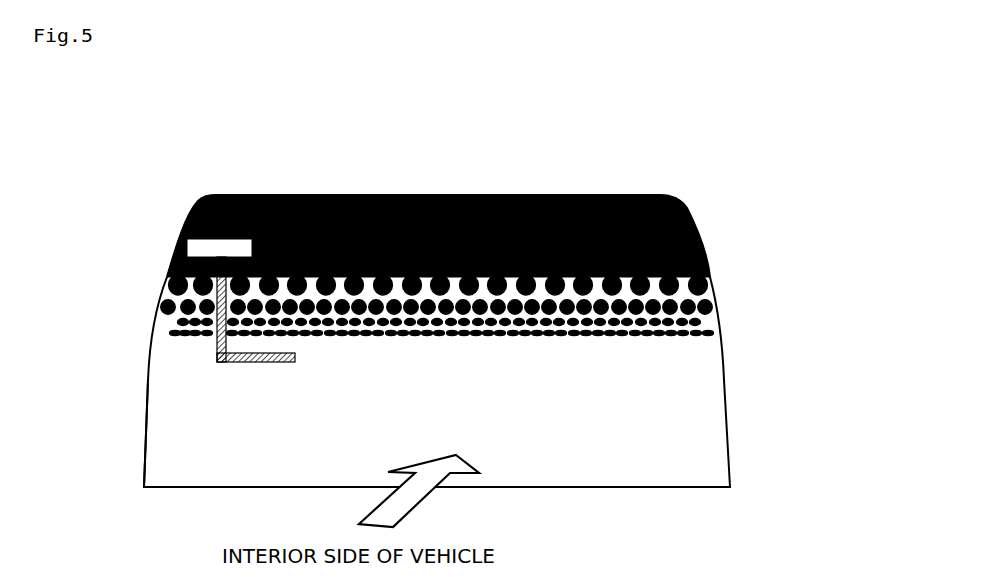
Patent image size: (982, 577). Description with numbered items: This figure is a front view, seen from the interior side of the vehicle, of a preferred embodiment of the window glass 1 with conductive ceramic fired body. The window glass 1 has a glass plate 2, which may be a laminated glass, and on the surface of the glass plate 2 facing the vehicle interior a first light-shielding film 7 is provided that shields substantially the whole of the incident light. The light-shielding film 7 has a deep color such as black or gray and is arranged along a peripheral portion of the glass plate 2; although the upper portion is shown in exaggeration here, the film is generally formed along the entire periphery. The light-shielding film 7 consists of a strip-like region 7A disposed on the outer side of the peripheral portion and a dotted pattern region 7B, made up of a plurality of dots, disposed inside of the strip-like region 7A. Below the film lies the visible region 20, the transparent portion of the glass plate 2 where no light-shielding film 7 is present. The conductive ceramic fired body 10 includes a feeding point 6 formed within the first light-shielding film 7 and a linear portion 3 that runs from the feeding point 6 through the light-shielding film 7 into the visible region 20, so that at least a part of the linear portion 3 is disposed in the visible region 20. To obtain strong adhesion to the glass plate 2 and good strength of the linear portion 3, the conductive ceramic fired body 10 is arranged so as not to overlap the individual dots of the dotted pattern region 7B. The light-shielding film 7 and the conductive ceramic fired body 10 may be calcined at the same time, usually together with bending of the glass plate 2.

The window glass with conductive ceramic fired body 1 is at (598, 165).
The glass plate 2 is at (163, 458).
The linear portion 3 is at (217, 343).
The feeding point 6 is at (207, 245).
The first light-shielding film 7 is at (505, 265).
The strip-like region 7A is at (725, 200).
The dotted pattern region 7B is at (725, 279).
The conductive ceramic fired body 10 is at (240, 362).
The visible region 20 is at (740, 343).